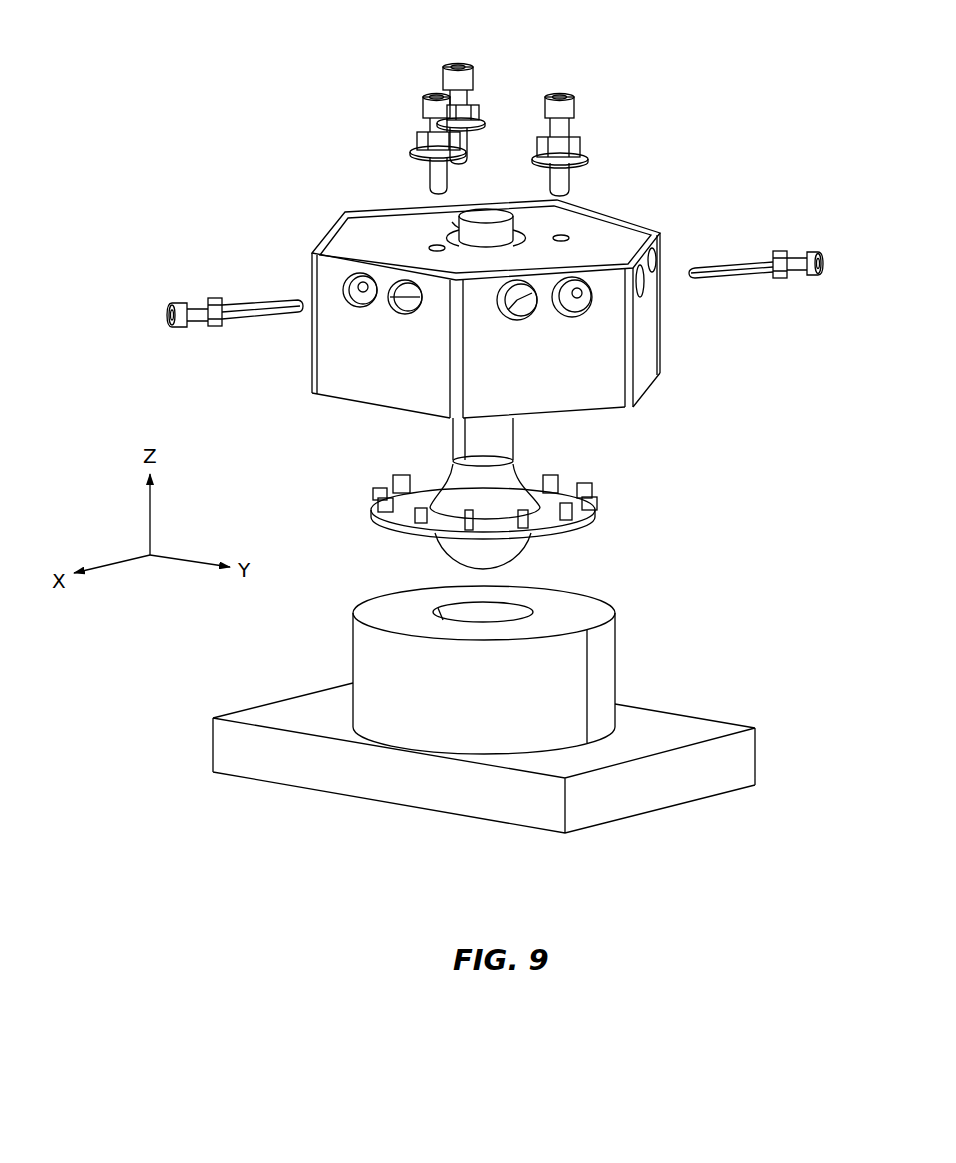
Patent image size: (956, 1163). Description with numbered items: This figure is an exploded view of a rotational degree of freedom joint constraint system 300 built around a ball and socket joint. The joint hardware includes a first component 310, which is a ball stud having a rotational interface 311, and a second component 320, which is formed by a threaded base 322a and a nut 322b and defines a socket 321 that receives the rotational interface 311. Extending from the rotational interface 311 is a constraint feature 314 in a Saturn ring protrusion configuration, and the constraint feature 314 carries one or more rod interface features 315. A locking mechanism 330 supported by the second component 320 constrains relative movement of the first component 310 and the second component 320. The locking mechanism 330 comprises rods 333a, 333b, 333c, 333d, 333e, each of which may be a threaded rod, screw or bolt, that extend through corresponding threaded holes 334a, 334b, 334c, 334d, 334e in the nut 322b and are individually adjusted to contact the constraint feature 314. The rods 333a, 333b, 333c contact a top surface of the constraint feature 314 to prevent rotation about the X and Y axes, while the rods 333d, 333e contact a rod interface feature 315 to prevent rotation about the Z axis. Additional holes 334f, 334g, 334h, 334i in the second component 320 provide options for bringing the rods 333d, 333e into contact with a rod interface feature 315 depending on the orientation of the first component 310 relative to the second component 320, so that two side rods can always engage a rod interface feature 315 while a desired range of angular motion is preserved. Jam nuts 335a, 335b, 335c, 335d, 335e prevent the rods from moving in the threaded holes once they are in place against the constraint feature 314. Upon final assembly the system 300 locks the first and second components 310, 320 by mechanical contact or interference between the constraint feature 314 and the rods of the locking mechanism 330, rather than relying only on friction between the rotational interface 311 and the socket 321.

The rotational degree of freedom joint constraint system 300 is at (210, 112).
The first component 310 is at (428, 426).
The rotational interface 311 is at (517, 482).
The constraint feature 314 is at (370, 476).
The rod interface feature 315 is at (595, 507).
The second component 320 is at (629, 655).
The socket 321 is at (493, 610).
The threaded base 322a is at (353, 660).
The nut 322b is at (313, 363).
The locking mechanism 330 is at (611, 102).
The rod 333a is at (430, 98).
The rod 333b is at (447, 68).
The rod 333c is at (550, 97).
The rod 333d is at (176, 303).
The rod 333e is at (812, 252).
The hole 334a is at (430, 246).
The hole 334b is at (455, 222).
The hole 334c is at (563, 238).
The hole 334d is at (415, 311).
The hole 334e is at (641, 282).
The hole 334f is at (361, 288).
The hole 334g is at (515, 300).
The hole 334h is at (577, 292).
The hole 334i is at (653, 262).
The jam nut 335a is at (412, 148).
The jam nut 335b is at (481, 106).
The jam nut 335c is at (588, 155).
The jam nut 335d is at (215, 298).
The jam nut 335e is at (780, 279).